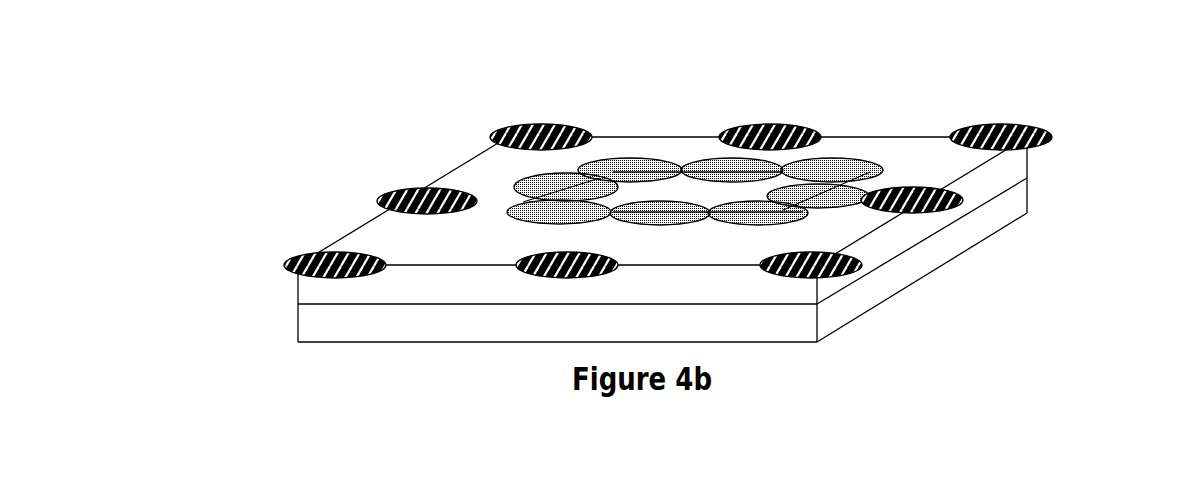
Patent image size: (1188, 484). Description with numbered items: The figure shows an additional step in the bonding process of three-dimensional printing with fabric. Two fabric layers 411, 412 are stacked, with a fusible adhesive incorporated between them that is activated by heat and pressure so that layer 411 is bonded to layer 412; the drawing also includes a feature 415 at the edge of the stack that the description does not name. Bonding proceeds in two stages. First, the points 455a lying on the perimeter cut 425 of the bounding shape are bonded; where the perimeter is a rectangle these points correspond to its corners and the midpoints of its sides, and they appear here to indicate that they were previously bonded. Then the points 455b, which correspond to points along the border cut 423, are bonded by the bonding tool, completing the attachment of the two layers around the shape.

The fabric layer 411 is at (950, 262).
The fabric layer 412 is at (1028, 152).
The edge of substrate 415 is at (298, 283).
The border cut 423 is at (897, 137).
The perimeter cut 425 is at (615, 172).
The points 455a is at (497, 142).
The points 455b is at (847, 160).